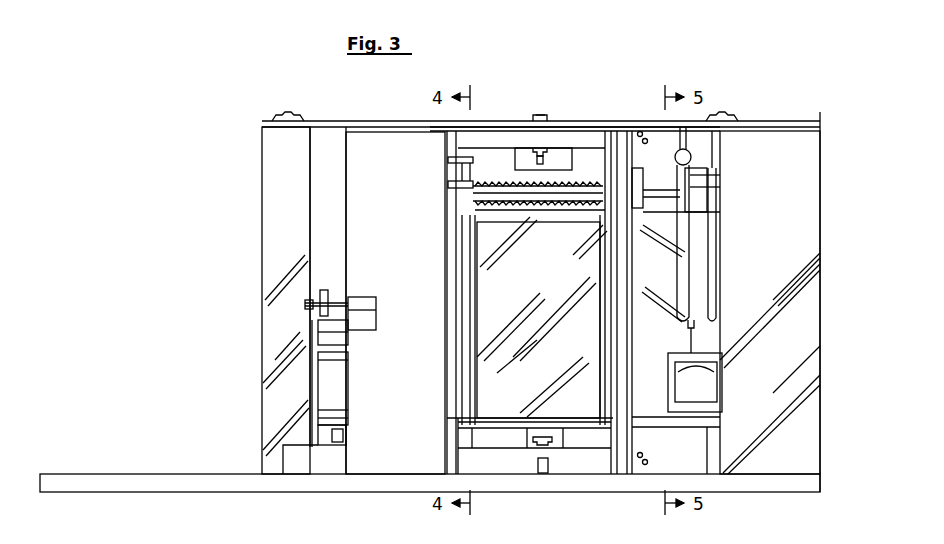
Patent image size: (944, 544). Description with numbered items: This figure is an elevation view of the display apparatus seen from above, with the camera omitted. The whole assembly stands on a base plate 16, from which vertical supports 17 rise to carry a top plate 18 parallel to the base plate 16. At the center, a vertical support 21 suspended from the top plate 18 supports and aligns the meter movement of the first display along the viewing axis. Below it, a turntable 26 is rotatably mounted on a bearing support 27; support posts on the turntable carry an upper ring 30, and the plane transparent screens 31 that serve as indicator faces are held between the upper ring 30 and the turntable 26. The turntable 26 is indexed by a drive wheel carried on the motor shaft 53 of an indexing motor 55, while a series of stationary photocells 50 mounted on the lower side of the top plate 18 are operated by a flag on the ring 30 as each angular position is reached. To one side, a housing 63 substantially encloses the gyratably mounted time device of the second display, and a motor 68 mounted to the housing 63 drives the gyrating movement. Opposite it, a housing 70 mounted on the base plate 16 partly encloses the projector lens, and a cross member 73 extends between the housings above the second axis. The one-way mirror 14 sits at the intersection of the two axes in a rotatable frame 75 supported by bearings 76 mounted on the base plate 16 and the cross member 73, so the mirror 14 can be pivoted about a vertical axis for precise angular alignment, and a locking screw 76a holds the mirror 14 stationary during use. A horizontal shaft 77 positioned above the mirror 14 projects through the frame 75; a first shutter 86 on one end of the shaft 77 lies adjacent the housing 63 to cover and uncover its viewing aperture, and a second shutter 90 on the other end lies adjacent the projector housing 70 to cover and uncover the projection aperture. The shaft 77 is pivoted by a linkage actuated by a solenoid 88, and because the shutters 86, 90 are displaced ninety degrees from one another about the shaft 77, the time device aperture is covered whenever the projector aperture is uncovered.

The one-way mirror 14 is at (550, 373).
The base plate 16 is at (235, 480).
The vertical supports 17 is at (294, 178).
The top plate 18 is at (333, 127).
The vertical support 21 is at (510, 176).
The turntable 26 is at (648, 427).
The bearing support 27 is at (558, 438).
The upper ring 30 is at (649, 216).
The transparent screens 31 is at (657, 337).
The photocells 50 is at (559, 157).
The motor shaft 53 is at (340, 437).
The indexing motor 55 is at (317, 462).
The housing 63 is at (398, 198).
The motor 68 is at (346, 398).
The housing 70 is at (788, 213).
The cross member 73 is at (496, 128).
The rotatable frame 75 is at (626, 289).
The bearings 76 is at (544, 126).
The locking screw 76a is at (540, 116).
The horizontal shaft 77 is at (560, 203).
The first shutter 86 is at (457, 296).
The solenoid 88 is at (713, 397).
The second shutter 90 is at (710, 302).